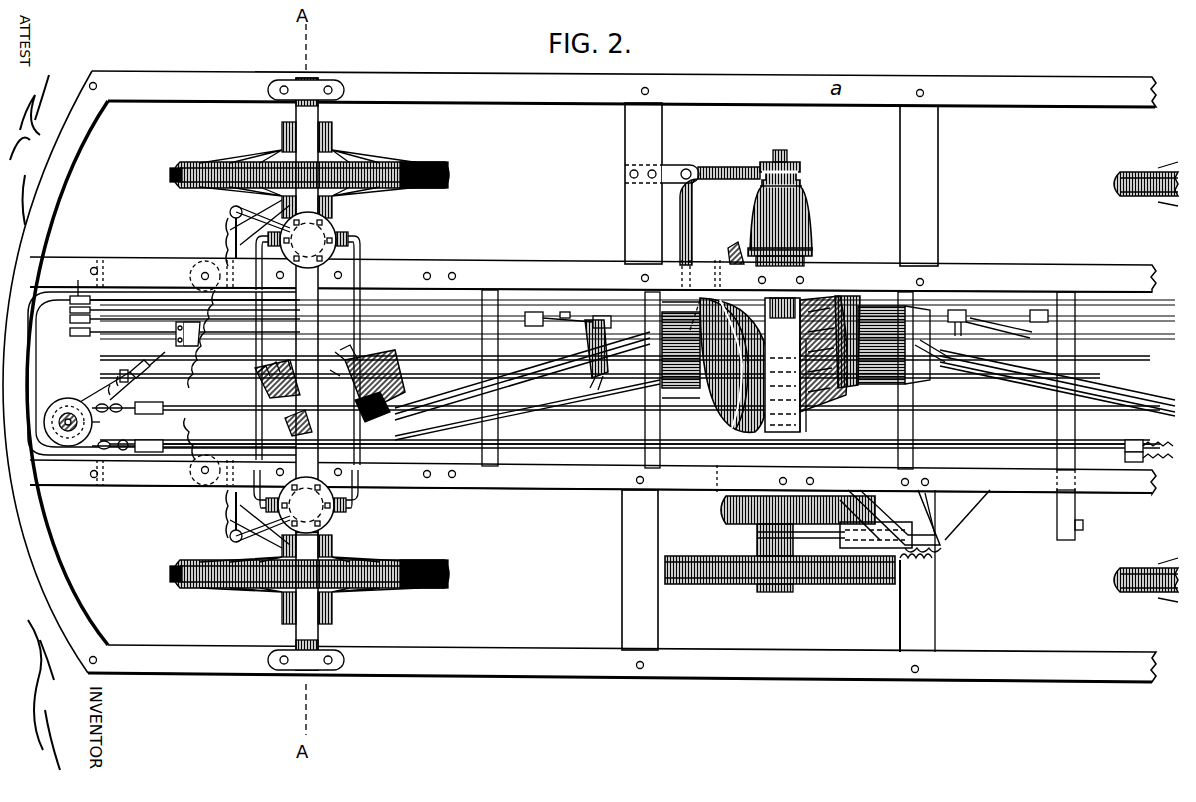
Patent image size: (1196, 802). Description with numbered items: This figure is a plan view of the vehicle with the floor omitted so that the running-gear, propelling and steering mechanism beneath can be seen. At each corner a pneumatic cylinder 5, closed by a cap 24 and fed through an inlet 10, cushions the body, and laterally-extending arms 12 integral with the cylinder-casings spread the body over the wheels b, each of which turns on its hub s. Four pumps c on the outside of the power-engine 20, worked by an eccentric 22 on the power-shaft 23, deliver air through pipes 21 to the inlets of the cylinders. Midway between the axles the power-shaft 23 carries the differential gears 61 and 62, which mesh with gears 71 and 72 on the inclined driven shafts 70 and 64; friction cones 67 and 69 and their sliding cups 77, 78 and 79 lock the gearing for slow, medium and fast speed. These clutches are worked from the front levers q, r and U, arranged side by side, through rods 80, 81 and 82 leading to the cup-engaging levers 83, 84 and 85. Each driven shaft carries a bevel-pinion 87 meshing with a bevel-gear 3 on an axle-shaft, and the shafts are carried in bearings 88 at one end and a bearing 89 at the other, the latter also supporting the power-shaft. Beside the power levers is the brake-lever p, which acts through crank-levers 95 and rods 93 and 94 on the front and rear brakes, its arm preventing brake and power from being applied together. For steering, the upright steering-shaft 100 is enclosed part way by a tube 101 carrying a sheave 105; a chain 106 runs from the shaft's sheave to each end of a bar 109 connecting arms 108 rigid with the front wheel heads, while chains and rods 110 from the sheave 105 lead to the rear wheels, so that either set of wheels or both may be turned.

The bevel-gear 3 is at (262, 385).
The pneumatic cylinder 5 is at (307, 372).
The inlet 10 is at (344, 244).
The arm 12 is at (318, 122).
The power-engine 20 is at (720, 514).
The pipe 21 is at (62, 362).
The eccentric 22 is at (782, 160).
The power-shaft 23 is at (755, 540).
The cap 24 is at (326, 236).
The differential gear 61 is at (800, 412).
The differential gear 62 is at (825, 356).
The shaft 64 is at (1014, 376).
The cone 67 is at (732, 365).
The cone 69 is at (809, 234).
The shaft 70 is at (522, 372).
The gear 71 is at (716, 272).
The gear 72 is at (850, 300).
The friction-engaging cup 77 is at (681, 360).
The friction-engaging cup 78 is at (894, 362).
The friction-engaging cup 79 is at (808, 202).
The rod 80 is at (470, 322).
The rod 81 is at (518, 300).
The rod 82 is at (580, 300).
The cup-engaging lever 83 is at (588, 368).
The cup-engaging lever 84 is at (692, 215).
The cup-engaging lever 85 is at (1000, 336).
The bevel-pinion 87 is at (372, 418).
The bearing 88 is at (378, 381).
The bearing 89 is at (782, 365).
The rod 93 is at (180, 340).
The rod 94 is at (192, 340).
The crank-lever 95 is at (356, 352).
The steering-shaft 100 is at (66, 438).
The tube 101 is at (118, 427).
The sheave 105 is at (58, 412).
The chain 106 is at (137, 376).
The arm 108 is at (232, 214).
The bar 109 is at (600, 387).
The rod 110 is at (632, 432).
The spokes S is at (290, 148).
The lever U is at (70, 281).
The wheel b is at (446, 175).
The pump c is at (916, 571).
The brake-lever p is at (76, 336).
The lever q is at (70, 320).
The lever r is at (70, 300).
The hub s is at (290, 428).